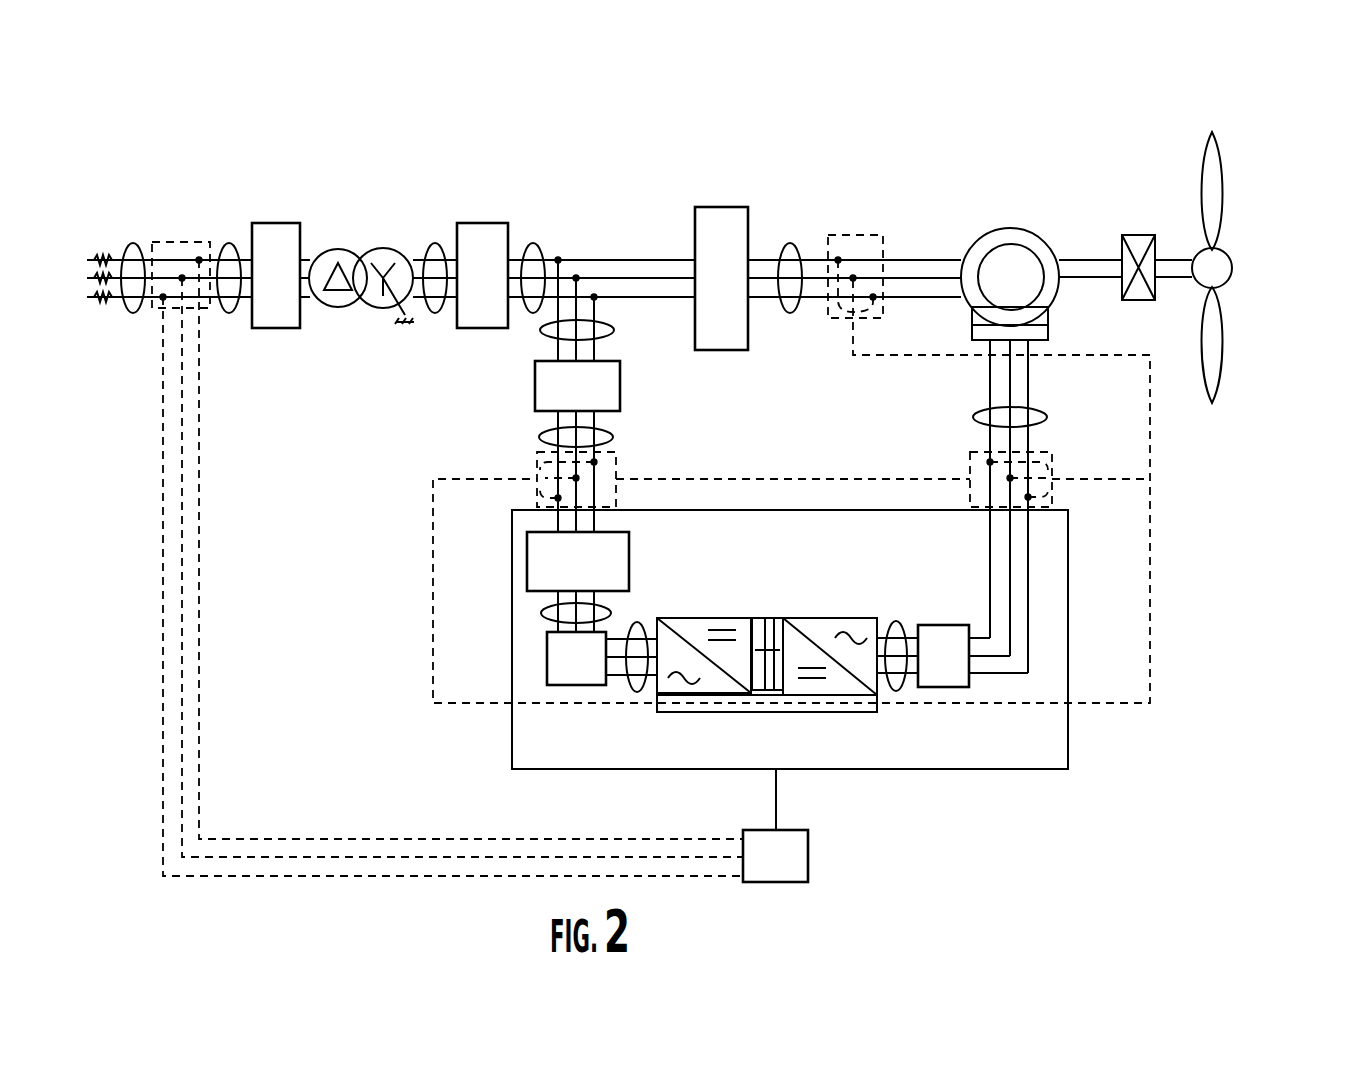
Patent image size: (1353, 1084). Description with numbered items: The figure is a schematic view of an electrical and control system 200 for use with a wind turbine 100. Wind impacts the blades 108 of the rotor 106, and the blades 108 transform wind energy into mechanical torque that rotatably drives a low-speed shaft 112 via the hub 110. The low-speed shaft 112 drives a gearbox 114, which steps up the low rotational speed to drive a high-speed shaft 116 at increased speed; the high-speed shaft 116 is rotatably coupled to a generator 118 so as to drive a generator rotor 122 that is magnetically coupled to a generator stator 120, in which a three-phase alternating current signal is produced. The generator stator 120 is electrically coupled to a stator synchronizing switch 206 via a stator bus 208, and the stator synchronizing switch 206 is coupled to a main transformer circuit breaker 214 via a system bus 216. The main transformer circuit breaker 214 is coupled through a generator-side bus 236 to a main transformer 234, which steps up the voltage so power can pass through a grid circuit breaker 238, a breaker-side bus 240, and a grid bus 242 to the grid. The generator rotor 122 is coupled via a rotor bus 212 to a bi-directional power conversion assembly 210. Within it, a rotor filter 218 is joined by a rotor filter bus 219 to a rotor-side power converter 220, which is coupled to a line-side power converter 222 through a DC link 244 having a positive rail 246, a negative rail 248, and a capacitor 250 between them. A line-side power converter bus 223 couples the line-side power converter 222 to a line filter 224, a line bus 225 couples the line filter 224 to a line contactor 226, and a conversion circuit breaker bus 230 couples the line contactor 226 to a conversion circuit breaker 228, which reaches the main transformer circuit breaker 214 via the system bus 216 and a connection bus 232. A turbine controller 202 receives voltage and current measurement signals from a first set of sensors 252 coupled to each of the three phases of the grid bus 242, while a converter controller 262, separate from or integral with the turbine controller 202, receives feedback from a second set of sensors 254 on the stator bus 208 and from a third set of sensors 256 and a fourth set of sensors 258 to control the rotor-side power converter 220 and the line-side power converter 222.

The wind turbine 100 is at (1182, 104).
The rotor 106 is at (1256, 280).
The blades 108 is at (1223, 195).
The hub 110 is at (1235, 268).
The low-speed shaft 112 is at (1175, 258).
The gearbox 114 is at (1137, 235).
The high-speed shaft 116 is at (1085, 258).
The generator 118 is at (1005, 220).
The generator stator 120 is at (1013, 228).
The generator rotor 122 is at (1000, 258).
The electrical and control system 200 is at (333, 143).
The turbine controller 202 is at (795, 873).
The stator synchronizing switch 206 is at (718, 207).
The stator bus 208 is at (790, 243).
The power conversion assembly 210 is at (787, 637).
The rotor bus 212 is at (1047, 417).
The main transformer circuit breaker 214 is at (483, 223).
The system bus 216 is at (533, 243).
The rotor filter 218 is at (940, 625).
The rotor filter bus 219 is at (894, 622).
The rotor-side power converter 220 is at (880, 690).
The line-side power converter 222 is at (657, 693).
The line-side power converter bus 223 is at (637, 622).
The line filter 224 is at (547, 655).
The line bus 225 is at (541, 613).
The line contactor 226 is at (527, 560).
The conversion circuit breaker 228 is at (620, 383).
The conversion circuit breaker bus 230 is at (613, 437).
The connection bus 232 is at (615, 330).
The main transformer 234 is at (384, 248).
The generator-side bus 236 is at (435, 243).
The grid circuit breaker 238 is at (277, 223).
The breaker-side bus 240 is at (229, 243).
The grid bus 242 is at (133, 243).
The DC link 244 is at (765, 635).
The positive rail 246 is at (778, 618).
The negative rail 248 is at (773, 695).
The capacitor 250 is at (765, 620).
The first set of sensors 252 is at (182, 242).
The second set of sensors 254 is at (857, 212).
The third set of sensors 256 is at (966, 478).
The fourth set of sensors 258 is at (632, 485).
The converter controller 262 is at (838, 712).